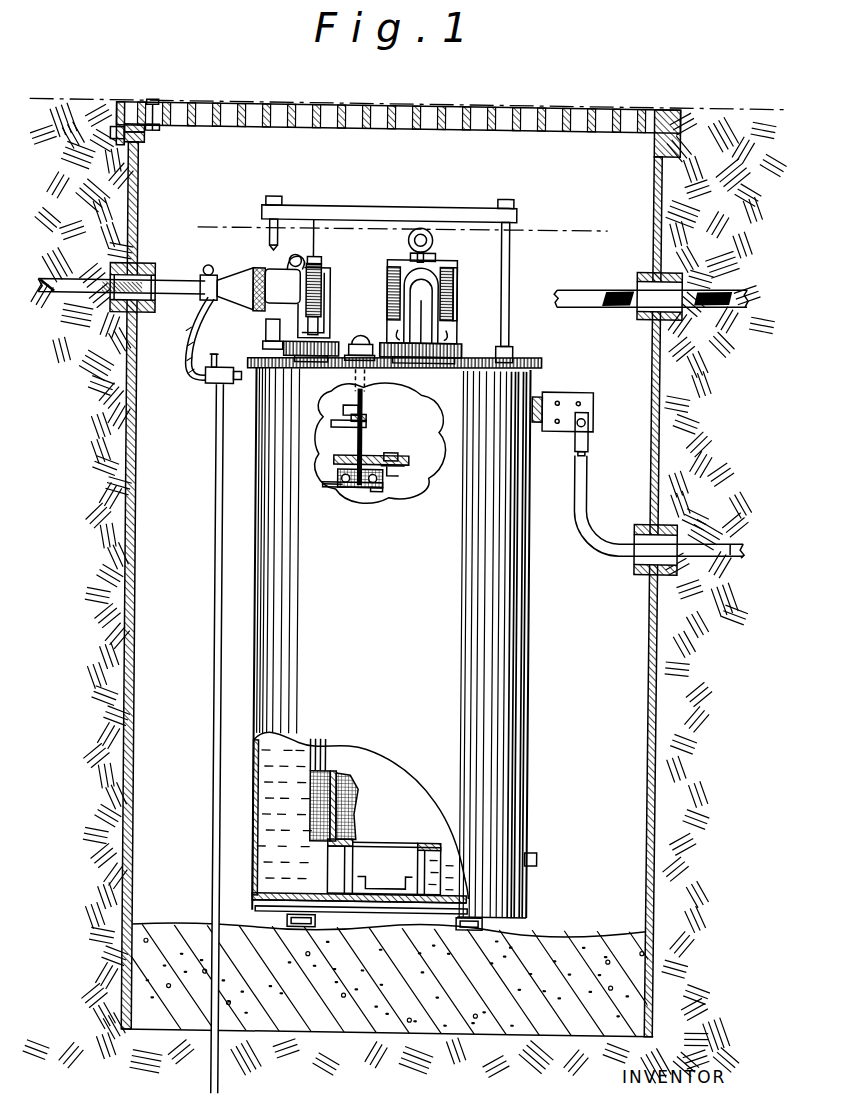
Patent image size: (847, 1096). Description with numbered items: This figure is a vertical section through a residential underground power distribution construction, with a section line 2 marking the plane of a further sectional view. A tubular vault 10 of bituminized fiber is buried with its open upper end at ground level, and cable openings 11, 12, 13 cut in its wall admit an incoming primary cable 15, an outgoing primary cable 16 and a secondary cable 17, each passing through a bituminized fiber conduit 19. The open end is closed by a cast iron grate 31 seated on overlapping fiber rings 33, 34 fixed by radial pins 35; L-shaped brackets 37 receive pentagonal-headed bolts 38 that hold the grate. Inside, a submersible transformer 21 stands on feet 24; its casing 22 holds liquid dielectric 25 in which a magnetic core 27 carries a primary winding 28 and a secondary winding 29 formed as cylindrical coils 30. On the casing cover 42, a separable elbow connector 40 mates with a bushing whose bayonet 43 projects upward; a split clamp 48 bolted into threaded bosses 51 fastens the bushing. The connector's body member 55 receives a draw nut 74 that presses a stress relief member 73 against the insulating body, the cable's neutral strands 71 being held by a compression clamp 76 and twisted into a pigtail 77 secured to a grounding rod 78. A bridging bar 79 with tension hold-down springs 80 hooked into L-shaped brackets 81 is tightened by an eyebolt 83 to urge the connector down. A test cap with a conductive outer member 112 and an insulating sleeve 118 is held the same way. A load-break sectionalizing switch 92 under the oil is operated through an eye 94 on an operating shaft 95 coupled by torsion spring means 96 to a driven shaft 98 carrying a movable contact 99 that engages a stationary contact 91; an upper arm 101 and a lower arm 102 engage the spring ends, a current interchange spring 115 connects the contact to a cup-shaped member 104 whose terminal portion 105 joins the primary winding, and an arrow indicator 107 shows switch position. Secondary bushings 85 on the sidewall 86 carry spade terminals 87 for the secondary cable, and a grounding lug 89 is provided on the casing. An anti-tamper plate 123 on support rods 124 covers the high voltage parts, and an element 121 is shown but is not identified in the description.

The section line 2- 2 is at (553, 224).
The tubular vault 10 is at (127, 502).
The cable opening 11 is at (108, 306).
The cable opening 12 is at (645, 323).
The cable opening 13 is at (648, 522).
The incoming primary cable 15 is at (42, 298).
The outgoing primary cable 16 is at (752, 297).
The secondary cable 17 is at (738, 556).
The conduit 19 is at (141, 267).
The distribution transformer 21 is at (540, 712).
The casing 22 is at (406, 689).
The feet 24 is at (290, 921).
The liquid dielectric 25 is at (275, 806).
The magnetic core 27 is at (396, 862).
The primary winding 28 is at (318, 818).
The secondary winding 29 is at (376, 778).
The cylindrical coils 30 is at (409, 819).
The grate 31 is at (498, 107).
The bituminized fiber ring 33 is at (120, 148).
The bituminized fiber ring 34 is at (114, 107).
The radial pins 35 is at (108, 138).
The L-shaped bracket 37 is at (160, 133).
The bolt 38 is at (150, 104).
The separable elbow connector 40 is at (338, 283).
The casing cover 42 is at (539, 357).
The bayonet 43 is at (212, 357).
The split clamp 48 is at (298, 358).
The threaded boss 51 is at (298, 360).
The body member 55 is at (290, 297).
The neutral strands 71 is at (732, 288).
The stress relief member 73 is at (232, 280).
The draw nut 74 is at (258, 270).
The compression clamp 76 is at (205, 270).
The pigtail 77 is at (201, 293).
The grounding rod 78 is at (214, 697).
The bridging bar 79 is at (318, 268).
The hold-down springs 80 is at (322, 290).
The L-shaped bracket 81 is at (318, 332).
The eyebolt 83 is at (312, 221).
The secondary insulating bushing 85 is at (541, 398).
The sidewall 86 is at (512, 577).
The spade terminal 87 is at (583, 392).
The grounding lug 89 is at (539, 860).
The stationary contact 91 is at (400, 483).
The load-break sectionalizing switch 92 is at (390, 455).
The eye 94 is at (360, 333).
The operating shaft 95 is at (364, 396).
The torsion spring means 96 is at (366, 421).
The driven shaft 98 is at (345, 456).
The movable contact 99 is at (402, 471).
The upper L-shaped arm 101 is at (340, 410).
The lower L-shaped arm 102 is at (330, 428).
The cup-shaped member 104 is at (352, 494).
The stationary terminal portion 105 is at (328, 494).
The arrow indicator 107 is at (362, 345).
The outer member 112 is at (421, 306).
The current interchange spring 115 is at (378, 494).
The insulating sleeve 118 is at (453, 275).
The valve 121 is at (210, 387).
The anti-tamper plate 123 is at (378, 207).
The support rods 124 is at (266, 215).